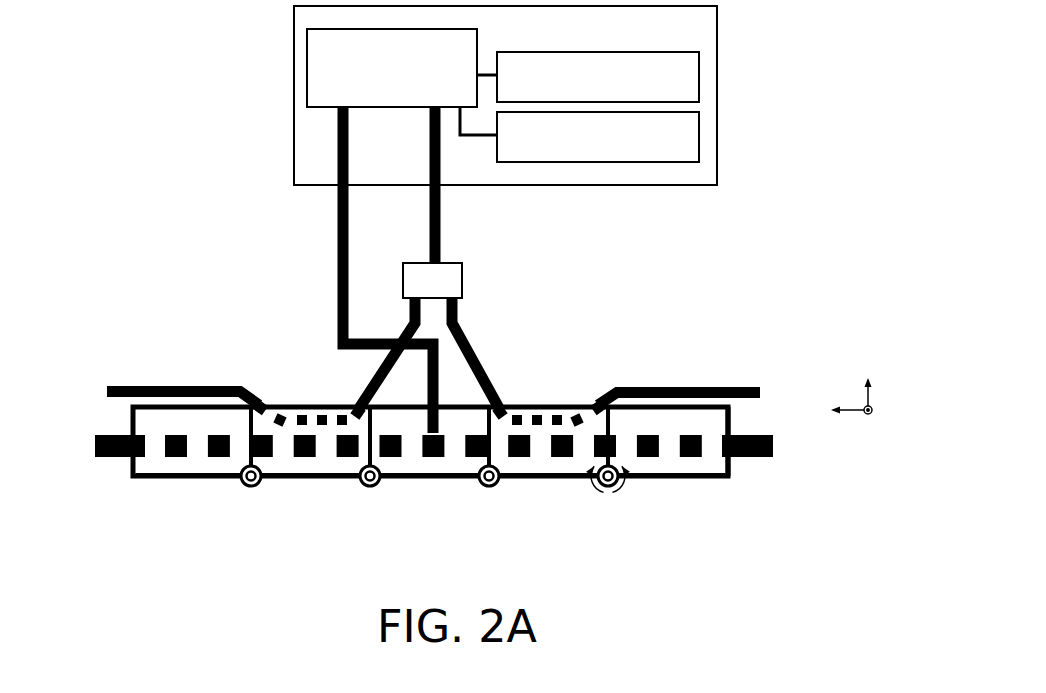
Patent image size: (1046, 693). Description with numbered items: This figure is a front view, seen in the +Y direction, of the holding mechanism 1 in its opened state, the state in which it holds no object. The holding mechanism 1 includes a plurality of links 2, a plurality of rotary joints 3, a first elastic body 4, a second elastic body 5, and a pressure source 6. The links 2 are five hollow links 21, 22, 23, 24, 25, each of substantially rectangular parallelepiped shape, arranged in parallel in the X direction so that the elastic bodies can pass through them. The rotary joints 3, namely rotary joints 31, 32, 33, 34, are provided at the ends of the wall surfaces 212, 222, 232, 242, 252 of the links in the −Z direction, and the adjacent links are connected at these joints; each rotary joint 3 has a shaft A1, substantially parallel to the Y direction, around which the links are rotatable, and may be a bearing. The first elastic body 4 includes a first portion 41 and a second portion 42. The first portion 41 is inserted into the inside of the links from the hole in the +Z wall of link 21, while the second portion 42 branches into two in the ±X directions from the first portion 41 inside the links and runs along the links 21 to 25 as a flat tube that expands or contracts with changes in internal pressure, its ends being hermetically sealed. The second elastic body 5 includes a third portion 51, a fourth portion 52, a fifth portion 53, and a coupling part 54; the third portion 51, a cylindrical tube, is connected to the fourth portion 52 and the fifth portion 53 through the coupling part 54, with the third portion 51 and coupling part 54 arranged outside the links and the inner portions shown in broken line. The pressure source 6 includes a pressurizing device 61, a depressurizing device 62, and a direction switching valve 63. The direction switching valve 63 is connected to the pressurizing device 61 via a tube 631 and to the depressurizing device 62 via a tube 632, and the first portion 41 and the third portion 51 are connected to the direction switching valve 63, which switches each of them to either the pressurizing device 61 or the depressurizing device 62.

The holding mechanism 1 is at (803, 152).
The links 2 is at (118, 418).
The rotary joints 3 is at (195, 538).
The first elastic body 4 is at (290, 250).
The second elastic body 5 is at (617, 312).
The pressure source 6 is at (294, 137).
The link 21 is at (412, 465).
The link 22 is at (292, 465).
The link 23 is at (173, 467).
The link 24 is at (528, 465).
The link 25 is at (647, 467).
The wall surface 212 is at (435, 467).
The wall surface 222 is at (313, 467).
The wall surface 232 is at (195, 470).
The wall surface 242 is at (555, 467).
The wall surface 252 is at (687, 470).
The rotary joint 31 is at (253, 483).
The rotary joint 32 is at (372, 483).
The rotary joint 33 is at (493, 485).
The rotary joint 34 is at (598, 487).
The shaft A1 is at (610, 487).
The first portion 41 is at (337, 252).
The second portion 42 is at (170, 445).
The third portion 51 is at (440, 222).
The fourth portion 52 is at (380, 372).
The fifth portion 53 is at (643, 385).
The coupling part 54 is at (457, 288).
The pressurizing device 61 is at (700, 67).
The depressurizing device 62 is at (700, 125).
The direction switching valve 63 is at (307, 70).
The tube 631 is at (488, 75).
The tube 632 is at (467, 136).